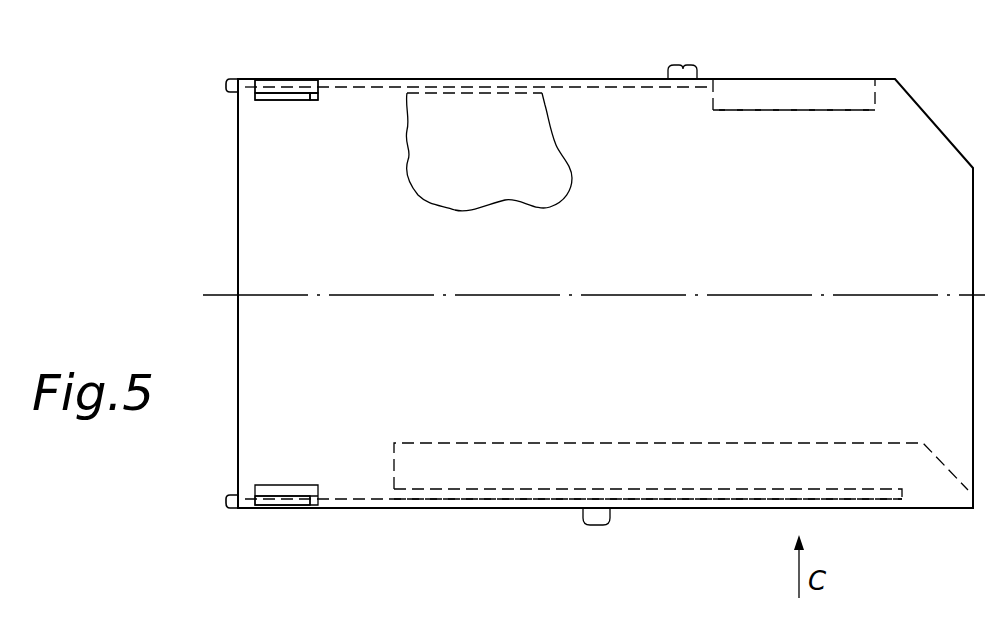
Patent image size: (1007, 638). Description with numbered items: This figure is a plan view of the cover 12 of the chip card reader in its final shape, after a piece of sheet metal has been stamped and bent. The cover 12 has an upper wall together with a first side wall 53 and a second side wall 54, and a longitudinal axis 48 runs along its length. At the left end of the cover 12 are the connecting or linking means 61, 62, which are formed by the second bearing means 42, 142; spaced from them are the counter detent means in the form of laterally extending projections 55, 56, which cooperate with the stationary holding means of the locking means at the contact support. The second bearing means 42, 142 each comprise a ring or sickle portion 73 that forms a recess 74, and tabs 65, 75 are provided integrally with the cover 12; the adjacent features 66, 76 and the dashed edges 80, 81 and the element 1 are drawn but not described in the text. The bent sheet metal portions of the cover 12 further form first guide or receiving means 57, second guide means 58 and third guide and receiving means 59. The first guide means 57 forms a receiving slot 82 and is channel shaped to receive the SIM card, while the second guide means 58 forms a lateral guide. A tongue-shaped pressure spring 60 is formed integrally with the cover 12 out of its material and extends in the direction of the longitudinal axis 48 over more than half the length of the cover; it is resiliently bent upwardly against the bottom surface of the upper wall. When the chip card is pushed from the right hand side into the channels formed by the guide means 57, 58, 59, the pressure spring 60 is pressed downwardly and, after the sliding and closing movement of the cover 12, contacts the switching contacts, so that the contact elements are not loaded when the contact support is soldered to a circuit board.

The housing 1 is at (548, 181).
The cover 12 is at (208, 180).
The second bearing means 42 is at (281, 102).
The longitudinal axis 48 is at (212, 295).
The first side wall 53 is at (424, 80).
The second side wall 54 is at (397, 509).
The laterally extending projection 55 is at (680, 70).
The laterally extending projection 56 is at (605, 518).
The first guide means 57 is at (744, 118).
The second guide means 58 is at (466, 100).
The third guide means 59 is at (345, 500).
The pressure spring 60 is at (660, 455).
The connecting means 61 is at (318, 66).
The connecting means 62 is at (258, 518).
The tab 65 is at (226, 499).
The lower clip 66 is at (262, 487).
The sickle portion 73 is at (290, 56).
The recess 74 is at (277, 80).
The tab 75 is at (226, 86).
The clip step 76 is at (311, 101).
The lower dashed edge 80 is at (472, 506).
The upper dashed edge 81 is at (530, 87).
The receiving slot 82 is at (826, 90).
The second bearing means 142 is at (297, 514).